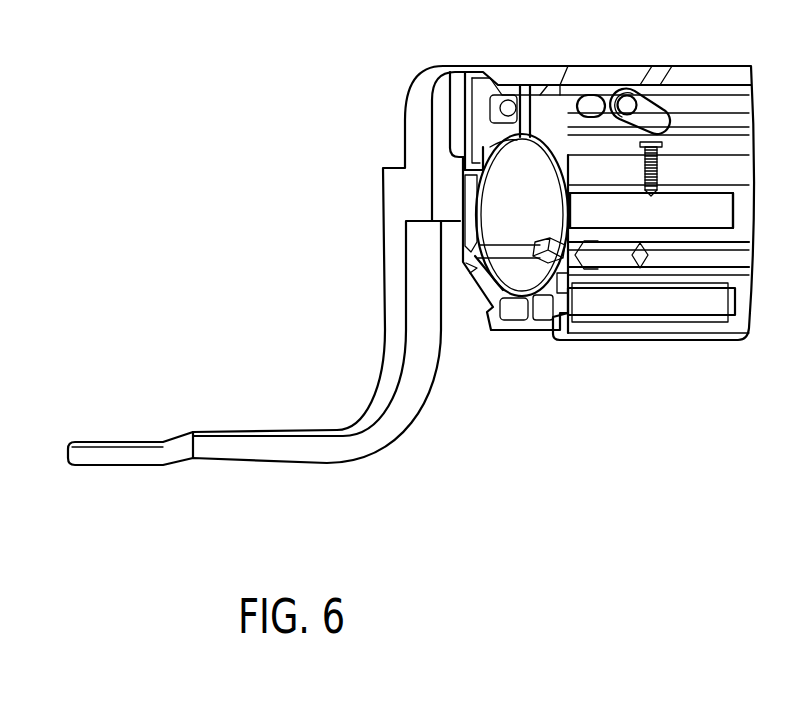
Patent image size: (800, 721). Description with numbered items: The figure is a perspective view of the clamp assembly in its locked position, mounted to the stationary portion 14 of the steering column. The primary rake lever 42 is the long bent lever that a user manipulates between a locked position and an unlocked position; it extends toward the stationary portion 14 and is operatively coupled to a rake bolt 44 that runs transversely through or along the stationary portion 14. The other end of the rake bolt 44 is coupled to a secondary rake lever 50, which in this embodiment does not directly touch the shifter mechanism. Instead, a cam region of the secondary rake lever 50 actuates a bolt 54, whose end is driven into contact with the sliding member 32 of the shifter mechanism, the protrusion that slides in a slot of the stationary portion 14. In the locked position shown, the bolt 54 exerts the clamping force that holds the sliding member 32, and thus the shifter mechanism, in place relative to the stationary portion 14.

The stationary portion 14 is at (727, 90).
The sliding member 32 is at (687, 218).
The primary rake lever 42 is at (372, 440).
The rake bolt 44 is at (592, 102).
The secondary rake lever 50 is at (642, 115).
The bolt 54 is at (662, 175).